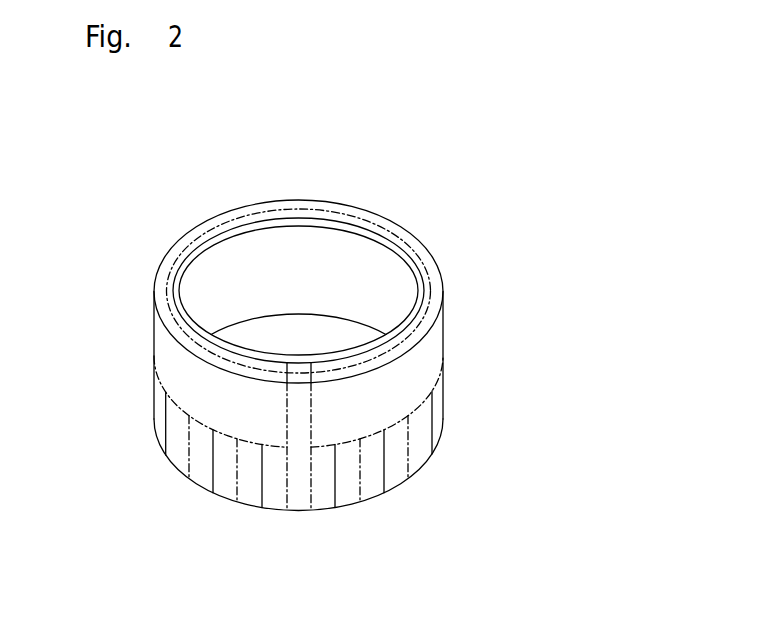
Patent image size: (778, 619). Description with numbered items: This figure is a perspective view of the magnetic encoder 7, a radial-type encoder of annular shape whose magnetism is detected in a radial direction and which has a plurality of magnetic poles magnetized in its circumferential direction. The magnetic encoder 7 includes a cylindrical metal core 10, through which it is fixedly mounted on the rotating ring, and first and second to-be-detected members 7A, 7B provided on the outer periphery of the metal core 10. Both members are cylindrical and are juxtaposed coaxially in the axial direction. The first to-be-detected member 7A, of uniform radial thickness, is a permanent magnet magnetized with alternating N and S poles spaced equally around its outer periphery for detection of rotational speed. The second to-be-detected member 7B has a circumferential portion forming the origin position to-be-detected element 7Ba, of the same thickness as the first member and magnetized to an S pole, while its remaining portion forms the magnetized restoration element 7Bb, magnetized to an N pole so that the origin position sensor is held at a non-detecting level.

The magnetic encoder 7 is at (318, 339).
The first to-be-detected member 7A is at (410, 465).
The second to-be-detected member 7B is at (318, 380).
The origin position to-be-detected element 7Ba is at (295, 402).
The magnetized restoration element 7Bb is at (172, 353).
The metal core 10 is at (347, 245).